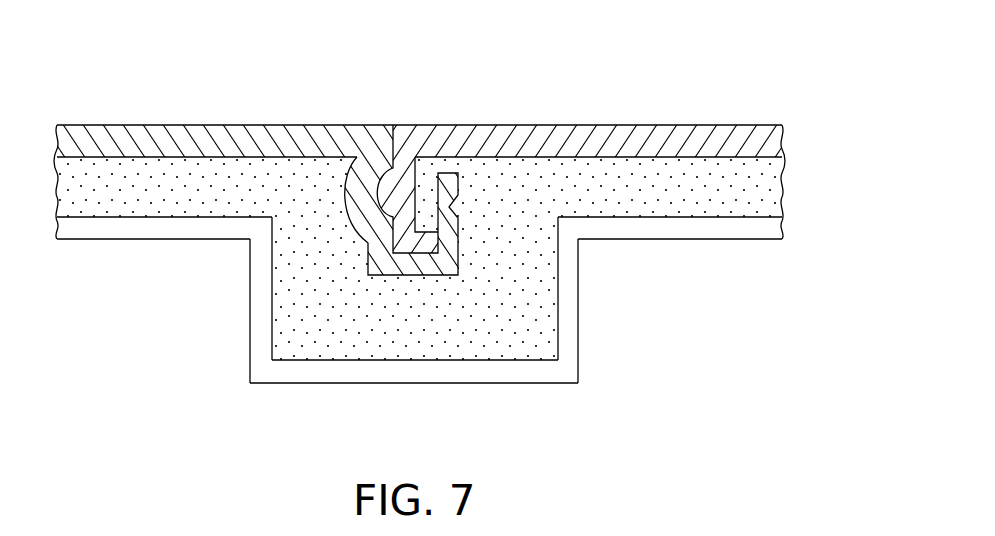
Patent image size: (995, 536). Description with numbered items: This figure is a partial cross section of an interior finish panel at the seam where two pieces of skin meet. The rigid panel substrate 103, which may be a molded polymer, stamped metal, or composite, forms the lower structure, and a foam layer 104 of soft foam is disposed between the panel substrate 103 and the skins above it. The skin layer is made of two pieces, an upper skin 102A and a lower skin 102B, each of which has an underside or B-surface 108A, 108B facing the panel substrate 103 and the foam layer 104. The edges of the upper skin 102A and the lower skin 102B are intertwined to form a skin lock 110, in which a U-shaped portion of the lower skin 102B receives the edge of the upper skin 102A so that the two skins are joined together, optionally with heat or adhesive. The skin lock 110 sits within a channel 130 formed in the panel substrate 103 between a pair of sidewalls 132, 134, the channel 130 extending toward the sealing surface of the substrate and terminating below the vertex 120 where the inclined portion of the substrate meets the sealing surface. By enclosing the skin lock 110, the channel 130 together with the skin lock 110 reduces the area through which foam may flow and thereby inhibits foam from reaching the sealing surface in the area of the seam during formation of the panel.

The upper skin 102A is at (685, 122).
The lower skin 102B is at (177, 122).
The panel substrate 103 is at (97, 248).
The foam layer 104 is at (779, 192).
The B-surface of upper skin 108A is at (602, 160).
The B-surface of lower skin 108B is at (270, 160).
The skin lock 110 is at (337, 278).
The vertex 120 is at (258, 395).
The channel 130 is at (415, 355).
The sidewall 132 is at (248, 307).
The sidewall 134 is at (580, 307).